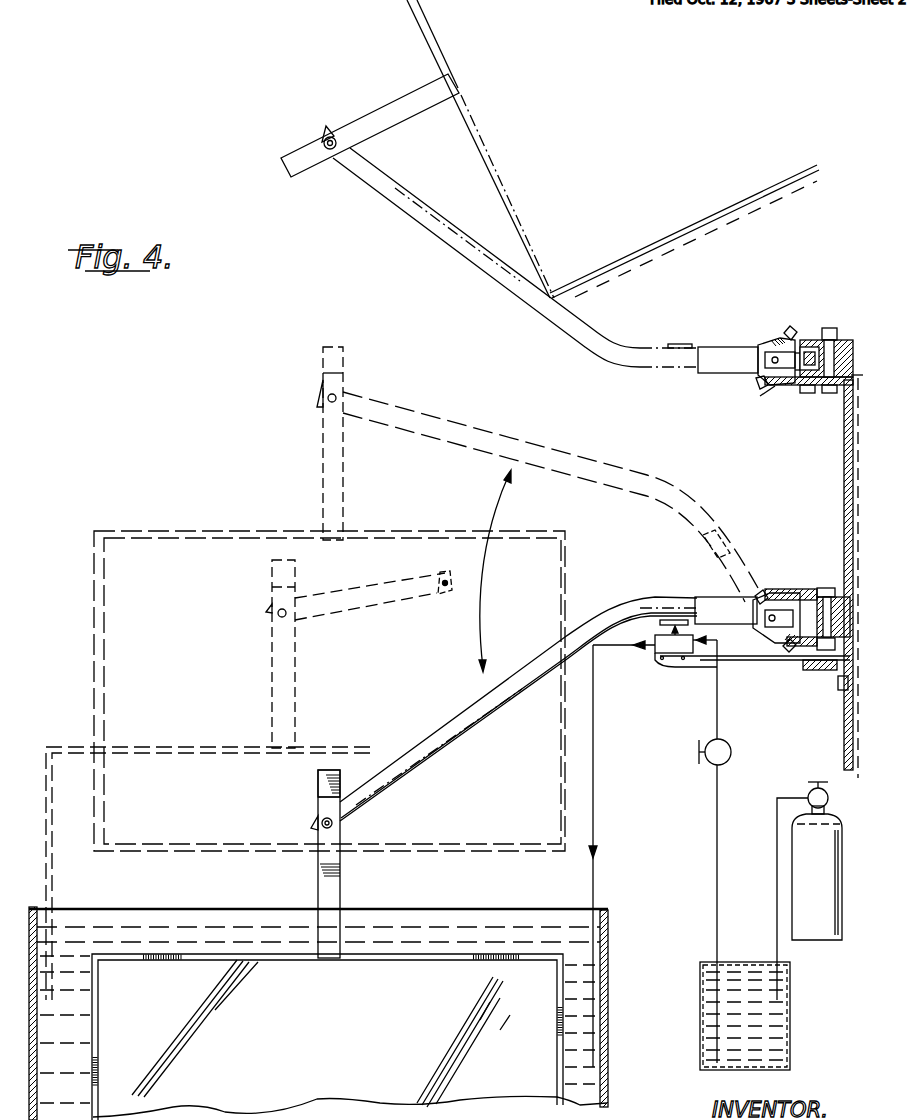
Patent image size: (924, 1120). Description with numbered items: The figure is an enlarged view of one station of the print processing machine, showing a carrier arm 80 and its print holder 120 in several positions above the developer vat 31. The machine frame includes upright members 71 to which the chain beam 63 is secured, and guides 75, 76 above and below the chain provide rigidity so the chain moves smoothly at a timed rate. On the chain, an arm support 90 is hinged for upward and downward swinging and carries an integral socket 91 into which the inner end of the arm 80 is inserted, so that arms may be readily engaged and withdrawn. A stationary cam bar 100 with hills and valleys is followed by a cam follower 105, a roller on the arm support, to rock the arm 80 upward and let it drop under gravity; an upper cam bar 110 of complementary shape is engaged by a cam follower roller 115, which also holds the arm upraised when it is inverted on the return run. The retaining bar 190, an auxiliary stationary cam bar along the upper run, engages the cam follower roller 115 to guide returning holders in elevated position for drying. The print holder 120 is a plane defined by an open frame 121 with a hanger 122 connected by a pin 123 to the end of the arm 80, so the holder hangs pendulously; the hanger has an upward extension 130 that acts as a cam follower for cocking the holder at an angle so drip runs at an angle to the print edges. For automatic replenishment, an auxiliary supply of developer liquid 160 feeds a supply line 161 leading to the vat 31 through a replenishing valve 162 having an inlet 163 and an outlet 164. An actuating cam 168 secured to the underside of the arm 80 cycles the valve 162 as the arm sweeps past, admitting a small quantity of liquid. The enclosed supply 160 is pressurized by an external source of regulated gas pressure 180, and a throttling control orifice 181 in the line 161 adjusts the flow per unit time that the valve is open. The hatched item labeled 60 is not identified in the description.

The developer vat 31 is at (607, 915).
The boss 60 is at (792, 378).
The chain beam 63 is at (844, 470).
The upright members 71 is at (850, 735).
The upper guide 75 is at (808, 340).
The lower guide 76 is at (810, 385).
The carrier arm 80 is at (555, 448).
The arm support 90 is at (777, 340).
The socket 91 is at (718, 347).
The cam bar 100 is at (800, 656).
The cam follower 105 is at (788, 327).
The upper cam bar 110 is at (770, 584).
The cam follower roller 115 is at (757, 380).
The print holder 120 is at (420, 42).
The open frame 121 is at (92, 1020).
The hanger 122 is at (393, 104).
The pin 123 is at (322, 823).
The upward extension 130 is at (325, 770).
The auxiliary supply of developer liquid 160 is at (707, 1015).
The supply line 161 is at (715, 837).
The replenishing valve 162 is at (650, 635).
The inlet 163 is at (715, 643).
The outlet 164 is at (618, 650).
The actuating cam 168 is at (673, 343).
The source of regulated gas pressure 180 is at (797, 892).
The throttling control orifice 181 is at (730, 750).
The retaining bar 190 is at (768, 395).